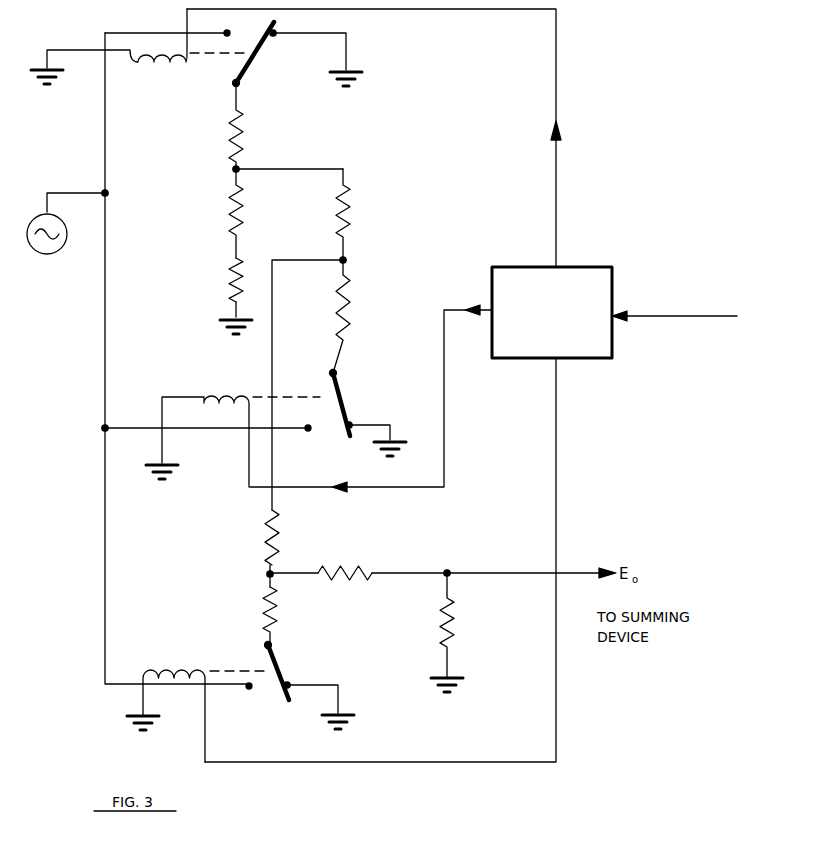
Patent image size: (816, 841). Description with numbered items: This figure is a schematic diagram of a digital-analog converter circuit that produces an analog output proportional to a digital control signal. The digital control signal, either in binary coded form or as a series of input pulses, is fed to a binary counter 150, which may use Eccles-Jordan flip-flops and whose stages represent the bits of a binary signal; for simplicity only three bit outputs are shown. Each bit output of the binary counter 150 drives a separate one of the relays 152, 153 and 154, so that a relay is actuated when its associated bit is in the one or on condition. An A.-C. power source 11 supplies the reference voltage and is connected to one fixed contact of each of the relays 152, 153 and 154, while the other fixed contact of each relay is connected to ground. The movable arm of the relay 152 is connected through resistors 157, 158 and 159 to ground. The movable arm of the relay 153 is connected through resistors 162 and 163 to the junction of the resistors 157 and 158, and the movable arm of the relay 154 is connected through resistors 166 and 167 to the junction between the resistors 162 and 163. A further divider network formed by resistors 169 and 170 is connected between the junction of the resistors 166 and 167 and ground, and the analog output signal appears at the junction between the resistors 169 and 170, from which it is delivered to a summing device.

The A.-C. power source 11 is at (37, 251).
The binary counter 150 is at (586, 283).
The relay 152 is at (187, 72).
The relay 153 is at (256, 384).
The relay 154 is at (210, 658).
The resistor 157 is at (234, 146).
The resistor 158 is at (234, 210).
The resistor 159 is at (234, 286).
The resistor 162 is at (341, 315).
The resistor 163 is at (348, 204).
The resistor 166 is at (266, 622).
The resistor 167 is at (268, 530).
The resistor 169 is at (352, 572).
The resistor 170 is at (449, 630).